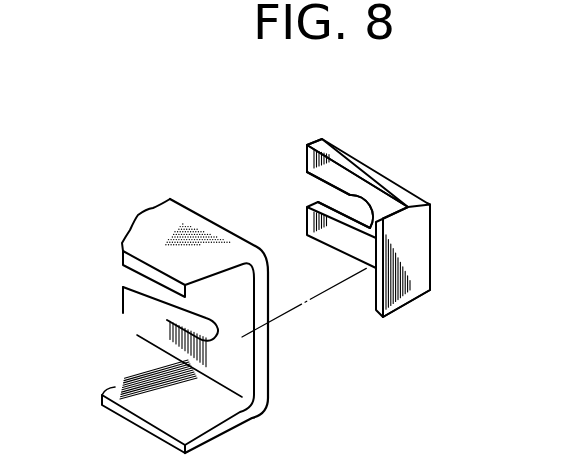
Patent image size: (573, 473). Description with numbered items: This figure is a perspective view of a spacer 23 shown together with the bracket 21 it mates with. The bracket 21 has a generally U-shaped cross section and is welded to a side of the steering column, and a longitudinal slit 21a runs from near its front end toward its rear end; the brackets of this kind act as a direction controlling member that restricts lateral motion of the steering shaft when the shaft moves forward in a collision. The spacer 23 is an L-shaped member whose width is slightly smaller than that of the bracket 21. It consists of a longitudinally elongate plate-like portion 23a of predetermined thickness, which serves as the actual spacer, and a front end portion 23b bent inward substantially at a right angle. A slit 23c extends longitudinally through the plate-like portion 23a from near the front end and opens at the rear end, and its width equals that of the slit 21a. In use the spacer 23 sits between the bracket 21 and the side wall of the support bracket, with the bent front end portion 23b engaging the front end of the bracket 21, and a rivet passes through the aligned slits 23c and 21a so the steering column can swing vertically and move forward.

The bracket 21 is at (181, 203).
The longitudinal slit 21a is at (160, 299).
The spacer 23 is at (399, 185).
The plate-like portion 23a is at (351, 178).
The front end portion 23b is at (403, 283).
The slit 23c is at (321, 190).